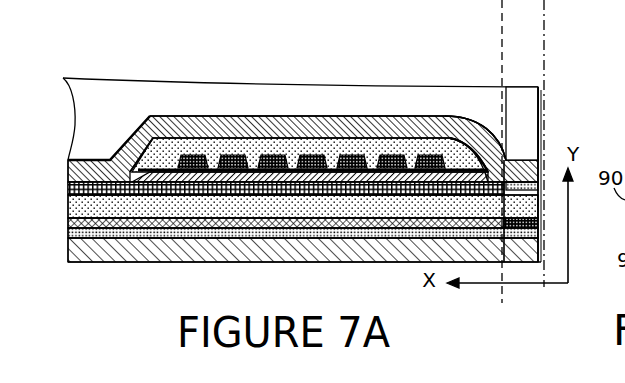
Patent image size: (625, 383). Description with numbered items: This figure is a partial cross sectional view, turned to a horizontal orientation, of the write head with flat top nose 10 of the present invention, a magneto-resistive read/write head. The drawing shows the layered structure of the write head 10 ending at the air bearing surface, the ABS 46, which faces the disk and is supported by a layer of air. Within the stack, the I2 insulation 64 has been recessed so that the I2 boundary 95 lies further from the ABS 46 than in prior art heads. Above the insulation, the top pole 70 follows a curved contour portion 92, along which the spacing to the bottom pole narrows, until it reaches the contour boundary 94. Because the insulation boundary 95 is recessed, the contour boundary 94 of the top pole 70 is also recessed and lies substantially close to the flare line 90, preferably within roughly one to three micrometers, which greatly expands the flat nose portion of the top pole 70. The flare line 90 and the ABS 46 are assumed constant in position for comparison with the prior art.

The write head with flat top nose 10 is at (328, 151).
The top pole 70 is at (317, 128).
The I2 insulation 64 is at (378, 143).
The flare line 90 is at (500, 63).
The I2 boundary 95 is at (491, 122).
The curved contour portion 92 is at (482, 129).
The contour boundary 94 is at (505, 152).
The air bearing surface (ABS) 46 is at (545, 95).